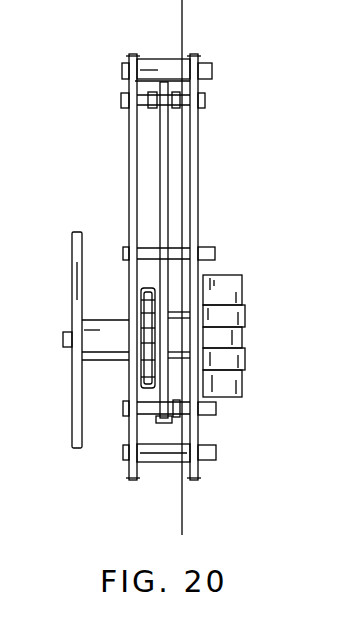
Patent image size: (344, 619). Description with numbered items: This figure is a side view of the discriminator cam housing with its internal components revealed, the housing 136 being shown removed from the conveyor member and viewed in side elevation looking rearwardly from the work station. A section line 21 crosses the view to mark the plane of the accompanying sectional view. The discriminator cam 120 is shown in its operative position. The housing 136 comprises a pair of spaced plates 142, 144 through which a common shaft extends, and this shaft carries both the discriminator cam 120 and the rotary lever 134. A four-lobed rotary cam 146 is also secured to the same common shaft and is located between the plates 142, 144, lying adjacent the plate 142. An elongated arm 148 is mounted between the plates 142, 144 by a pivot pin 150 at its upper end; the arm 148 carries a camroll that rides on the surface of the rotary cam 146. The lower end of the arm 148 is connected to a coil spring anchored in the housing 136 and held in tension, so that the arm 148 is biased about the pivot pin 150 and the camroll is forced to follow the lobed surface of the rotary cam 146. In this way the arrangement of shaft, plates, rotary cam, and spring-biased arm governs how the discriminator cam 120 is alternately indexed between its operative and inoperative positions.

The section line 21- 21 is at (100, 28).
The discriminator cam 120 is at (72, 283).
The rotary lever 134 is at (245, 290).
The housing 136 is at (200, 228).
The plate 142 is at (128, 130).
The plate 144 is at (198, 150).
The four-lobed rotary cam 146 is at (147, 287).
The elongated arm 148 is at (168, 193).
The pivot pin 150 is at (205, 103).